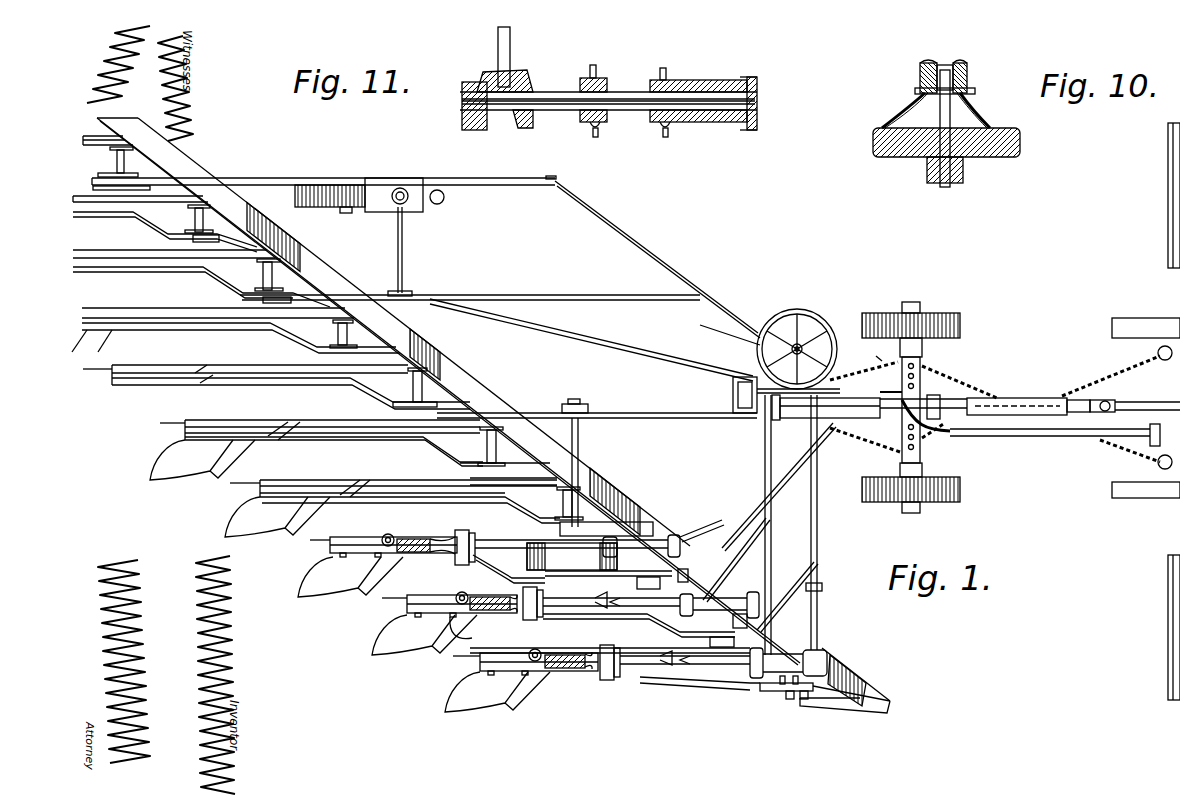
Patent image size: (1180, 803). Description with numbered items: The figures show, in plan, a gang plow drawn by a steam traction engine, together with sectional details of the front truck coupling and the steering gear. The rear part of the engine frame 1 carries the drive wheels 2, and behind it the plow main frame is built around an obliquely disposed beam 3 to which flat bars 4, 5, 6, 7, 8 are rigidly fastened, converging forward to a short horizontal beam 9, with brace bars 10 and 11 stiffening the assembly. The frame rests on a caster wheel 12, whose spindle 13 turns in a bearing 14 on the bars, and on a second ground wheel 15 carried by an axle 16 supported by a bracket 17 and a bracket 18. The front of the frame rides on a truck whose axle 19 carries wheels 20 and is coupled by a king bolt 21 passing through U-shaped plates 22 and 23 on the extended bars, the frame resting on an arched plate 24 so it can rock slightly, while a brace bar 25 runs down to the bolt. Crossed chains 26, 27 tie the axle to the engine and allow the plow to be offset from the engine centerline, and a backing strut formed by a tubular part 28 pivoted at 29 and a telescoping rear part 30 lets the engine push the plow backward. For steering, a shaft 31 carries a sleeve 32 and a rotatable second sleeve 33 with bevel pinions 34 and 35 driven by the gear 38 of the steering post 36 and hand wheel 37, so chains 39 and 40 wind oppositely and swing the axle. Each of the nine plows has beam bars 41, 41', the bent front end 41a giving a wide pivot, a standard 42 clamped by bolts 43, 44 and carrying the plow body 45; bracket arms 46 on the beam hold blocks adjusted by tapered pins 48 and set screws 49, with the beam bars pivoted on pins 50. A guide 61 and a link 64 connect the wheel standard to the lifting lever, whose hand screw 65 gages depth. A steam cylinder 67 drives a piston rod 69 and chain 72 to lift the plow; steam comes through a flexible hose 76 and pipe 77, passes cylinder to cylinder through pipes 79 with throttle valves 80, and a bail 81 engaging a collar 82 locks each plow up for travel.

In FIG. 1, the frame of traction engine 1 is at (1135, 320).
In FIG. 1, the drive wheels 2 is at (1168, 232).
In FIG. 1, the obliquely disposed beam 3 is at (872, 683).
In FIG. 1, the frame bar 4 is at (510, 188).
In FIG. 1, the frame bar 5 is at (470, 286).
In FIG. 10, the frame bar 6 is at (915, 85).
In FIG. 1, the frame bar 6 is at (666, 418).
In FIG. 11, the frame bar 7 is at (750, 132).
In FIG. 1, the frame bar 7 is at (745, 515).
In FIG. 1, the frame bar 8 is at (812, 583).
In FIG. 1, the short horizontally disposed beam 9 is at (733, 390).
In FIG. 1, the brace bar 10 is at (404, 258).
In FIG. 10, the brace bar 11 is at (967, 77).
In FIG. 1, the brace bar 11 is at (528, 325).
In FIG. 1, the caster wheel 12 is at (330, 185).
In FIG. 1, the spindle 13 is at (400, 188).
In FIG. 1, the bearing 14 is at (440, 202).
In FIG. 1, the second ground wheel 15 is at (572, 556).
In FIG. 1, the shaft or axle 16 is at (580, 448).
In FIG. 1, the bracket 17 is at (588, 410).
In FIG. 1, the bracket 18 is at (560, 530).
In FIG. 10, the axle 19 is at (892, 157).
In FIG. 1, the axle 19 is at (922, 458).
In FIG. 1, the wheels 20 is at (955, 315).
In FIG. 10, the king bolt 21 is at (930, 165).
In FIG. 1, the king bolt 21 is at (926, 405).
In FIG. 10, the U-shaped plate 22 is at (955, 63).
In FIG. 1, the U-shaped plate 22 is at (902, 418).
In FIG. 10, the U-shaped plate 23 is at (972, 88).
In FIG. 1, the U-shaped plate 23 is at (902, 396).
In FIG. 10, the arched plate 24 is at (895, 118).
In FIG. 1, the arched plate 24 is at (940, 365).
In FIG. 10, the brace bar 25 is at (965, 168).
In FIG. 1, the crossed chain 26 is at (1078, 394).
In FIG. 1, the crossed chain 27 is at (1105, 450).
In FIG. 1, the front tubular part 28 is at (1017, 398).
In FIG. 1, the pivot 29 is at (1115, 408).
In FIG. 10, the rear part 30 is at (985, 106).
In FIG. 1, the rear part 30 is at (960, 401).
In FIG. 11, the shaft 31 is at (588, 114).
In FIG. 1, the shaft 31 is at (757, 377).
In FIG. 11, the sleeve 32 is at (686, 85).
In FIG. 1, the sleeve 32 is at (790, 437).
In FIG. 11, the second sleeve 33 is at (545, 128).
In FIG. 1, the second sleeve 33 is at (757, 357).
In FIG. 11, the bevel pinion 34 is at (548, 86).
In FIG. 11, the bevel pinion 35 is at (462, 92).
In FIG. 1, the bevel pinion 35 is at (815, 327).
In FIG. 11, the upright steering post 36 is at (498, 52).
In FIG. 1, the upright steering post 36 is at (812, 342).
In FIG. 1, the hand wheel 37 is at (781, 312).
In FIG. 11, the bevel pinion or gear 38 is at (515, 70).
In FIG. 1, the bevel pinion or gear 38 is at (833, 355).
In FIG. 11, the chain 39 is at (668, 137).
In FIG. 1, the chain 39 is at (846, 452).
In FIG. 11, the chain 40 is at (595, 137).
In FIG. 1, the chain 40 is at (878, 358).
In FIG. 1, the beam bar 41 is at (422, 598).
In FIG. 1, the beam bar 41' is at (467, 524).
In FIG. 1, the front end of beam bar 41a is at (470, 485).
In FIG. 1, the plow shank or standard 42 is at (240, 428).
In FIG. 1, the bolt 43 is at (476, 640).
In FIG. 1, the bolt 44 is at (418, 617).
In FIG. 1, the plow body 45 is at (350, 576).
In FIG. 1, the bracket arm 46 is at (527, 470).
In FIG. 1, the tapered pin 48 is at (786, 692).
In FIG. 1, the set screw 49 is at (812, 693).
In FIG. 1, the pivot pin 50 is at (480, 452).
In FIG. 1, the guide 61 is at (612, 680).
In FIG. 1, the link 64 is at (530, 615).
In FIG. 1, the hand screw 65 is at (388, 534).
In FIG. 1, the steam cylinder 67 is at (676, 537).
In FIG. 1, the piston rod 69 is at (560, 553).
In FIG. 1, the chain 72 is at (414, 540).
In FIG. 1, the flexible hose or tube 76 is at (1040, 440).
In FIG. 1, the pipe 77 is at (765, 480).
In FIG. 1, the pipe 79 is at (722, 593).
In FIG. 1, the throttle valve 80 is at (688, 570).
In FIG. 1, the bail 81 is at (665, 530).
In FIG. 1, the flange or collar 82 is at (700, 668).